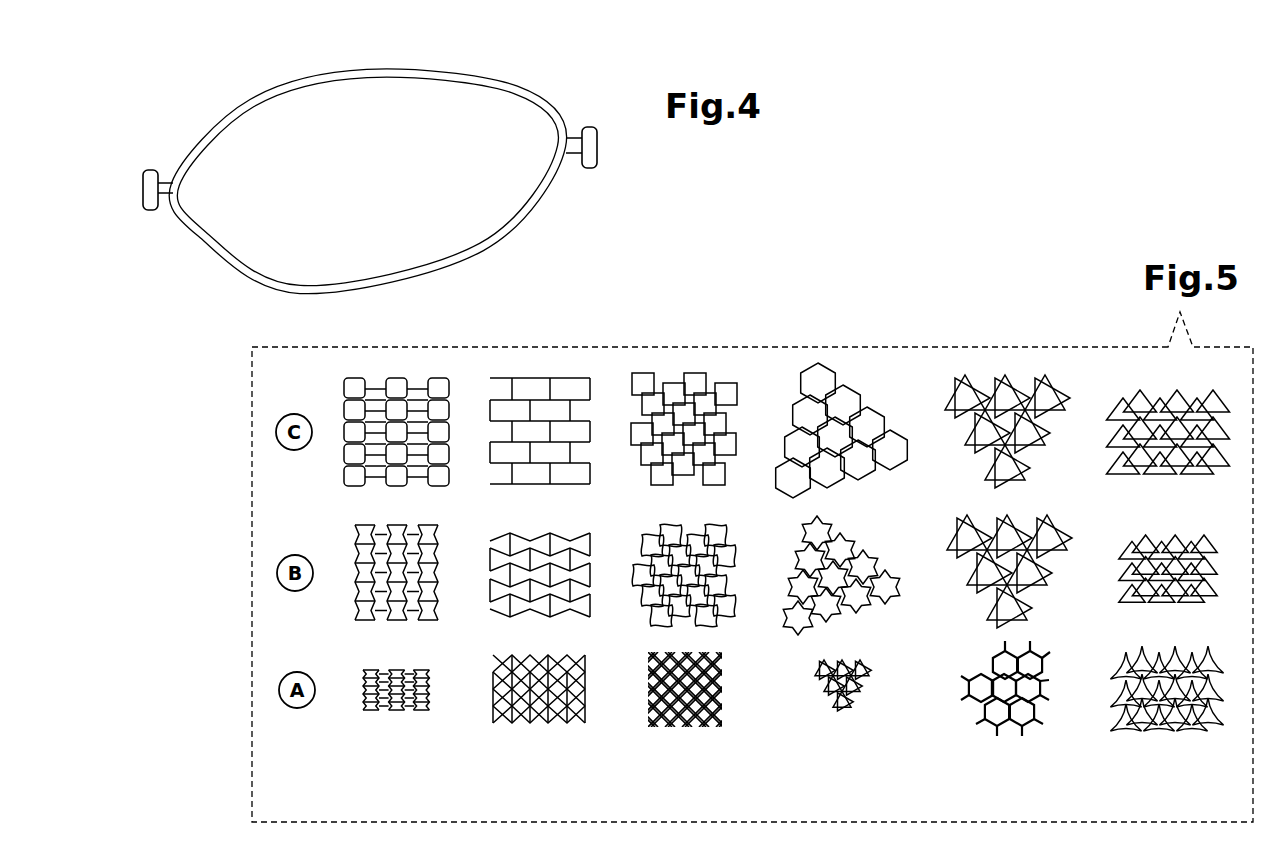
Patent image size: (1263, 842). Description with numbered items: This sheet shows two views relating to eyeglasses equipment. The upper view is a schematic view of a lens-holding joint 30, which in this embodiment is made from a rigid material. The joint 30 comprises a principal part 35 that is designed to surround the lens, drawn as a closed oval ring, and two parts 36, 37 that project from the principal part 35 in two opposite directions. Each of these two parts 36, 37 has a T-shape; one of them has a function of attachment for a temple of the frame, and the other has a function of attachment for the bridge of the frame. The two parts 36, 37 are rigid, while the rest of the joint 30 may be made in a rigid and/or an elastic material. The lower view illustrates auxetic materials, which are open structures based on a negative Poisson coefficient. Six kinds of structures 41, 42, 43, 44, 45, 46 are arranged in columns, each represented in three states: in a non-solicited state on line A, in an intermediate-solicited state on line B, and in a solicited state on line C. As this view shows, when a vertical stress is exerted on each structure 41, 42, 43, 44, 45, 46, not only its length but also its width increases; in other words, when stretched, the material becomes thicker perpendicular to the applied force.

In FIG. 4, the joint 30 is at (375, 169).
In FIG. 4, the principal part 35 is at (293, 79).
In FIG. 4, the part 36 is at (598, 152).
In FIG. 4, the part 37 is at (143, 182).
In FIG. 5, the structure 41 is at (394, 742).
In FIG. 5, the structure 42 is at (546, 742).
In FIG. 5, the structure 43 is at (692, 743).
In FIG. 5, the structure 44 is at (855, 743).
In FIG. 5, the structure 45 is at (1018, 743).
In FIG. 5, the structure 46 is at (1173, 743).